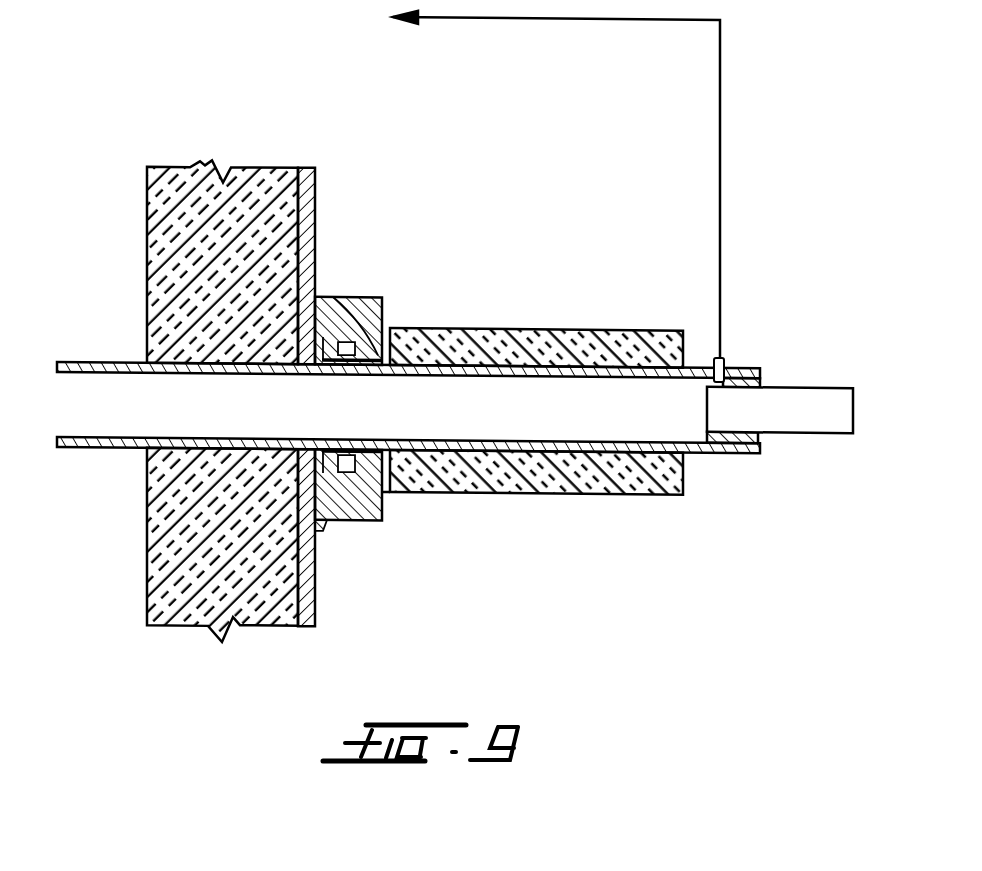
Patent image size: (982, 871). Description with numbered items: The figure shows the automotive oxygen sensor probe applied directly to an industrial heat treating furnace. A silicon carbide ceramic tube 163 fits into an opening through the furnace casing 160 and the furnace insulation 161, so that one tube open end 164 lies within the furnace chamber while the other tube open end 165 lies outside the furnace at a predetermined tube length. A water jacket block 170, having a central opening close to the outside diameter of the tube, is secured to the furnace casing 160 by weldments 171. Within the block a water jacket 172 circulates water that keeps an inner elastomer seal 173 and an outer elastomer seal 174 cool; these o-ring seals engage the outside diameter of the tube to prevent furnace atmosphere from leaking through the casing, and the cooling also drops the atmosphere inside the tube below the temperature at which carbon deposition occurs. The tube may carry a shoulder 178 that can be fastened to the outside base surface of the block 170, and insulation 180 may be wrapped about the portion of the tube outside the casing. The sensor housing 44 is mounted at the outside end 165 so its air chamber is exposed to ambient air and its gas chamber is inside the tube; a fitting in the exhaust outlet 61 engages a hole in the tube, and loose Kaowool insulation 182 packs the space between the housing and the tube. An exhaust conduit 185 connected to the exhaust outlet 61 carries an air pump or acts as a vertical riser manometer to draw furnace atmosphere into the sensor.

The furnace insulation 161 is at (147, 230).
The furnace casing 160 is at (315, 216).
The water jacket block 170 is at (372, 297).
The inner elastomer seal 173 is at (334, 333).
The water jacket 172 is at (382, 328).
The outer elastomer seal 174 is at (383, 343).
The tube open end 164 is at (57, 362).
The ceramic tube 163 is at (108, 448).
The insulation 180 is at (562, 328).
The shoulder 178 is at (388, 492).
The weldments 171 is at (325, 530).
The loose insulation 182 is at (770, 375).
The tube open end 165 is at (765, 450).
The sensor housing 44 is at (805, 435).
The exhaust outlet 61 is at (727, 360).
The exhaust conduit 185 is at (720, 140).